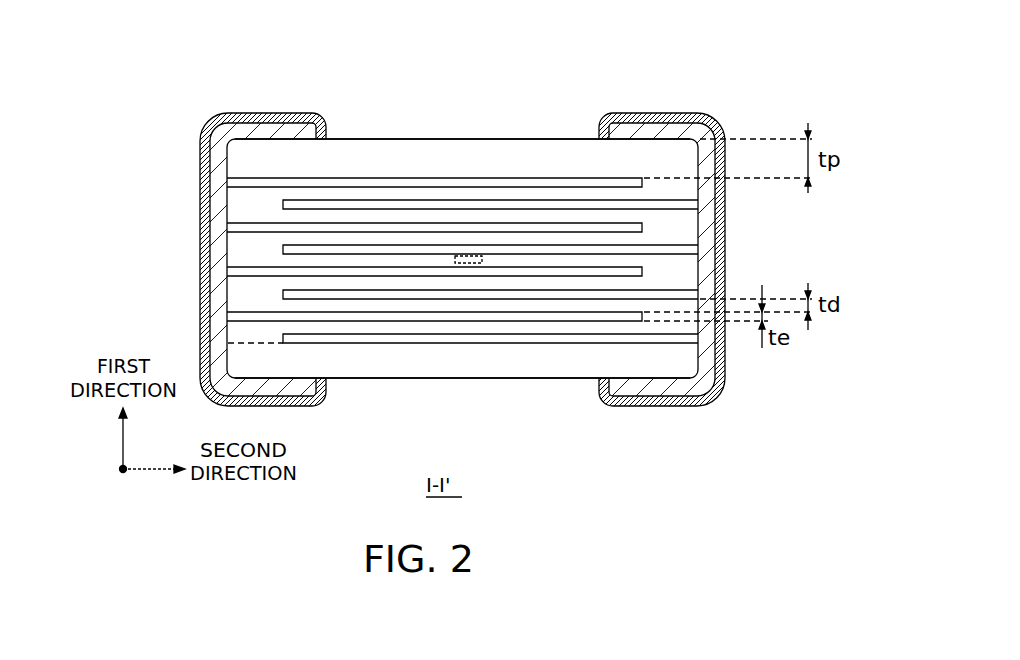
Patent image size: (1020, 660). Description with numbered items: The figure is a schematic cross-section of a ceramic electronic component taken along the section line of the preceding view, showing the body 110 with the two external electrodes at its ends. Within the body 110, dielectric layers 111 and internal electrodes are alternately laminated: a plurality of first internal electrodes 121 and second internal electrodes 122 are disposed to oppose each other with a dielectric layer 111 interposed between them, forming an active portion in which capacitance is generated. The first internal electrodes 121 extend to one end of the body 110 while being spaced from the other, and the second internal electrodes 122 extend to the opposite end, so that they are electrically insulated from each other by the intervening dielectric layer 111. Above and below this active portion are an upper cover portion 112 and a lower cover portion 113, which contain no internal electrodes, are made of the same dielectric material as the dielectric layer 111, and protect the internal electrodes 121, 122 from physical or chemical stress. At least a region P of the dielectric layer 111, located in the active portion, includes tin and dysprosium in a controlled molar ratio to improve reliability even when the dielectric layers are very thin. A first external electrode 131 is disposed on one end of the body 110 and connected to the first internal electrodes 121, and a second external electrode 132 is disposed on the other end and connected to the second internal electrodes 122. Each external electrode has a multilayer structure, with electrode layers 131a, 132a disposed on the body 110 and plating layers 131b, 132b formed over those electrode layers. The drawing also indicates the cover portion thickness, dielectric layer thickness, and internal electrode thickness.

The body 110 is at (395, 139).
The dielectric layer 111 is at (348, 216).
The upper cover portion 112 is at (467, 153).
The lower cover portion 113 is at (380, 366).
The first internal electrode 121 is at (533, 180).
The second internal electrode 122 is at (590, 201).
The first external electrode 131 is at (184, 259).
The electrode layer 131a is at (218, 190).
The plating layer 131b is at (205, 216).
The second external electrode 132 is at (740, 259).
The electrode layer 132a is at (707, 233).
The plating layer 132b is at (722, 257).
The region of the dielectric layer P is at (465, 263).